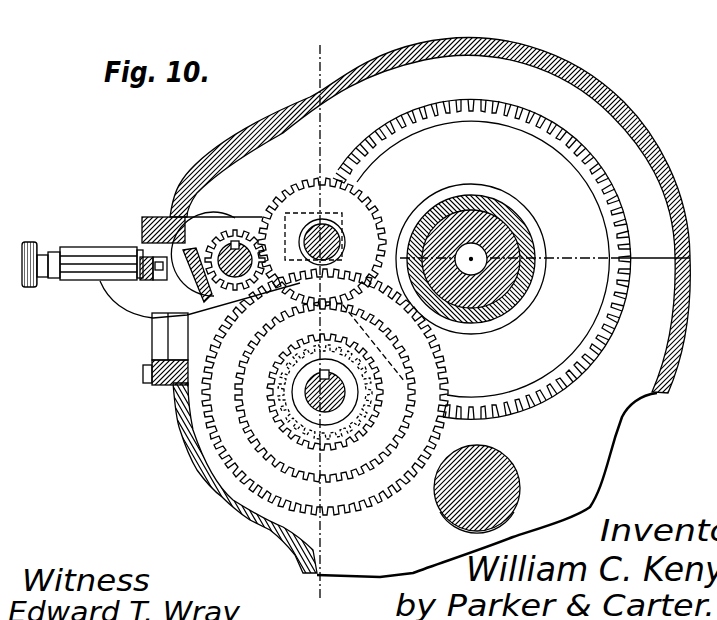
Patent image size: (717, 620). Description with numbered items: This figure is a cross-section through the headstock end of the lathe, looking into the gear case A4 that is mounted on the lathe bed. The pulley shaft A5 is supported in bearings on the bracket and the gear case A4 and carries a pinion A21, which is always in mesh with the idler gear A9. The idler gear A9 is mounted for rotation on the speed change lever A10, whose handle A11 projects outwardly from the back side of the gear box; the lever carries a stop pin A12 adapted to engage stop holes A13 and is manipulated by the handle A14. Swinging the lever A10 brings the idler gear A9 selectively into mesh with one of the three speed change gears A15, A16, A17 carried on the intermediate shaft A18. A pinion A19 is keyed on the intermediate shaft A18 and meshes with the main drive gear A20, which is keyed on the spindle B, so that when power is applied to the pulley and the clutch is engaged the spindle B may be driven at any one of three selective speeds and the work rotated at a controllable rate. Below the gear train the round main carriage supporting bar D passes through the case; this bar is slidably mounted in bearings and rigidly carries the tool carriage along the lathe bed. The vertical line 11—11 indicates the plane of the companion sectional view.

The gear case A4 is at (535, 75).
The main drive gear A20 is at (461, 147).
The spindle B is at (358, 310).
The main carriage supporting bar D is at (358, 310).
The idler gear A9 is at (303, 190).
The pinion A21 is at (226, 254).
The pulley shaft A5 is at (182, 213).
The handle A14 is at (22, 268).
The handle A11 is at (77, 247).
The stop pin A12 is at (142, 262).
The stop holes A13 is at (160, 278).
The speed change lever A10 is at (122, 292).
The speed change gear A15 is at (222, 413).
The speed change gear A16 is at (255, 423).
The speed change gear A17 is at (285, 432).
The intermediate shaft A18 is at (300, 407).
The pinion A19 is at (360, 437).
The section line 11- 11 is at (345, 49).